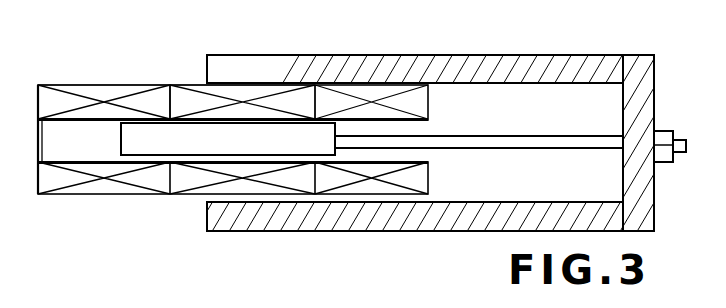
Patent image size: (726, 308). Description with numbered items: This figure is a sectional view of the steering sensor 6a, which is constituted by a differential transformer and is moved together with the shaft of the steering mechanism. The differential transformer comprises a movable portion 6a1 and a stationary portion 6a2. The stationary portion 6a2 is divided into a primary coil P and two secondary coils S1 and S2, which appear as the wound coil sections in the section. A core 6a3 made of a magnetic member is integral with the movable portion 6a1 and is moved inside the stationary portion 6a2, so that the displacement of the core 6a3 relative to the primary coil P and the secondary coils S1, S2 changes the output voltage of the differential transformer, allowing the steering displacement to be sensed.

The steering sensor 6a is at (409, 55).
The movable portion 6a1 is at (606, 72).
The stationary portion 6a2 is at (98, 195).
The core 6a3 is at (197, 148).
The primary coil P is at (188, 84).
The secondary coil S1 is at (526, 142).
The secondary coil S2 is at (85, 84).